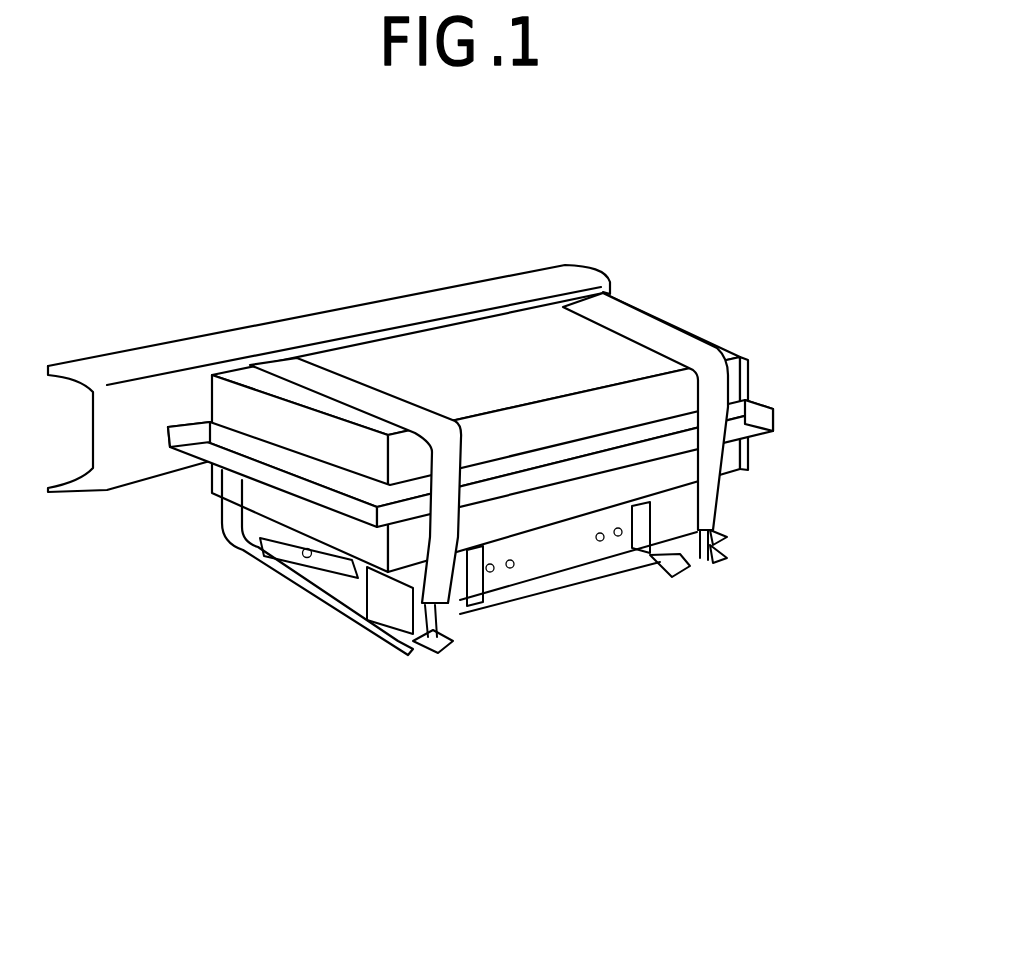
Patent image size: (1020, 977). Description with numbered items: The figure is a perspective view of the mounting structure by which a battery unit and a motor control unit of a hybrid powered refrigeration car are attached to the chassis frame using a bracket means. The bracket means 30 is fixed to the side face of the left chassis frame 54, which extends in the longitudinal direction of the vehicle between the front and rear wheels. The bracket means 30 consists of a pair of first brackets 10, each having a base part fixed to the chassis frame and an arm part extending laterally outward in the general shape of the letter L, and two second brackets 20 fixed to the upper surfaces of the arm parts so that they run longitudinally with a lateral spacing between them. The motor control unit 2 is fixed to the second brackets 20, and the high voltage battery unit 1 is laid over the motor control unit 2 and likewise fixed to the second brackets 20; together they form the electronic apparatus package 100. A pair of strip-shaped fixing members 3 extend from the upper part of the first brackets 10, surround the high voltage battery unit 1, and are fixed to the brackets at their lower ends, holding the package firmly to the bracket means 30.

The high voltage battery unit 1 is at (677, 403).
The motor control unit 2 is at (320, 608).
The strip-shaped fixing members 3 is at (340, 385).
The first bracket 10 is at (266, 610).
The second bracket 20 is at (500, 622).
The bracket means 30 is at (408, 680).
The left chassis frame 54 is at (495, 280).
The electronic apparatus package 100 is at (790, 410).